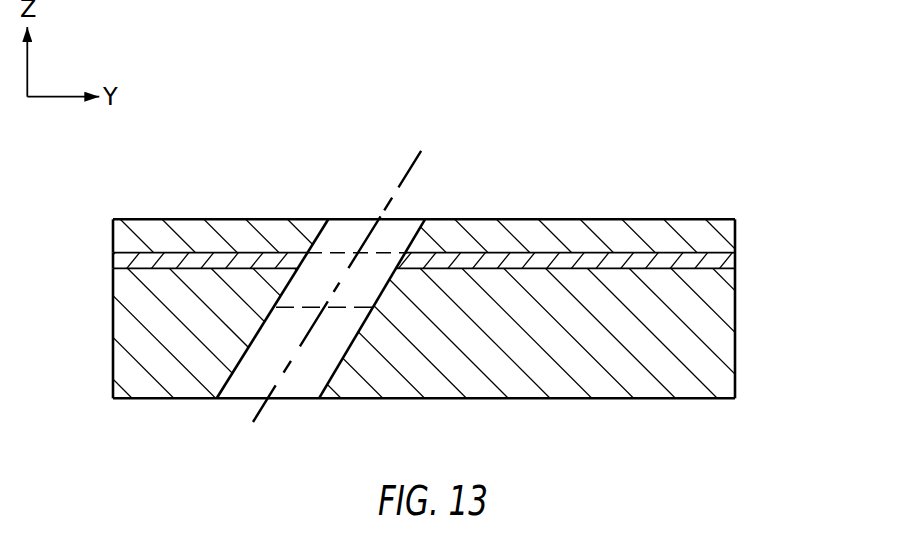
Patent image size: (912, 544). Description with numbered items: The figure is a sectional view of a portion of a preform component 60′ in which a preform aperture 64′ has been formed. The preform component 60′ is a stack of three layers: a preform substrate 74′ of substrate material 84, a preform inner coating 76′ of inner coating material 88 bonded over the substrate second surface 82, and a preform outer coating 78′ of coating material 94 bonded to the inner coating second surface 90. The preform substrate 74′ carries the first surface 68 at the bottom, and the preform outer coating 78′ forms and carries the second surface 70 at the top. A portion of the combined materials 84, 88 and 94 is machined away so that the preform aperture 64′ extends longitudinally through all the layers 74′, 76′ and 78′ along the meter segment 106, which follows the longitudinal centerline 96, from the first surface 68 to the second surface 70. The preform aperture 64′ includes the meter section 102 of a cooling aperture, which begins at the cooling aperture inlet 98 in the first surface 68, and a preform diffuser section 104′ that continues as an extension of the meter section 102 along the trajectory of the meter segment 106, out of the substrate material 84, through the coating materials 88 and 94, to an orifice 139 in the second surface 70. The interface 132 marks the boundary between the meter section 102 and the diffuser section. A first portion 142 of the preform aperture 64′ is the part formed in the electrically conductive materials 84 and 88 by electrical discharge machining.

The preform component 60′ is at (798, 170).
The second surface 70 is at (143, 219).
The coating material 94 is at (725, 235).
The preform outer coating 78′ is at (108, 228).
The inner coating second surface 90 is at (188, 252).
The substrate second surface 82 is at (208, 268).
The preform inner coating 76′ is at (108, 261).
The inner coating material 88 is at (725, 260).
The preform substrate 74′ is at (108, 355).
The substrate material 84 is at (723, 357).
The first surface 68 is at (142, 400).
The cooling aperture inlet 98 is at (232, 400).
The first portion of the preform aperture 142 is at (337, 340).
The longitudinal centerline 96 is at (418, 153).
The meter segment 106 is at (337, 260).
The meter section 102 is at (300, 383).
The orifice 139 is at (338, 219).
The preform aperture 64′ is at (333, 250).
The preform diffuser section 104′ is at (384, 258).
The interface 132 is at (381, 310).